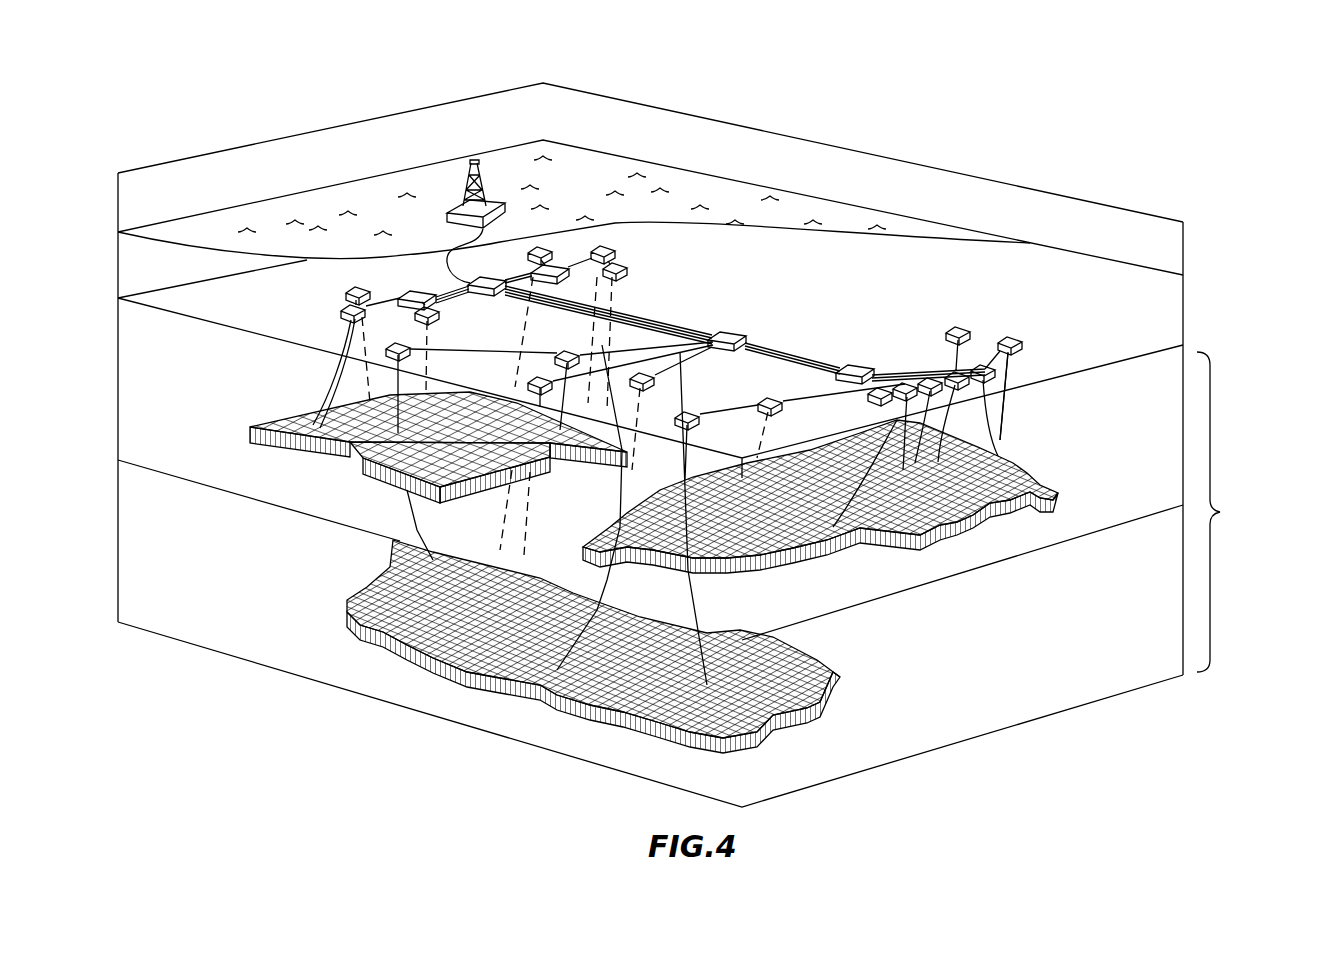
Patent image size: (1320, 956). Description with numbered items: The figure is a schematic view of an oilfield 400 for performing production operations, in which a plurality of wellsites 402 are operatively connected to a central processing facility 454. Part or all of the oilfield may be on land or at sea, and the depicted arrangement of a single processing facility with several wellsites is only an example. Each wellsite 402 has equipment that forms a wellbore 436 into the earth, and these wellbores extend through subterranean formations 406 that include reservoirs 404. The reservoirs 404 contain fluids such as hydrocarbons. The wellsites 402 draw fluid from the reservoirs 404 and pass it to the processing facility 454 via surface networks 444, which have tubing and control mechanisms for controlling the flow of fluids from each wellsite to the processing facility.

The oilfield 400 is at (167, 102).
The wellsites 402 is at (1015, 331).
The reservoirs 404 is at (837, 720).
The subterranean formations 406 is at (1220, 512).
The wellbore 436 is at (998, 453).
The surface networks 444 is at (385, 314).
The central processing facility 454 is at (452, 178).